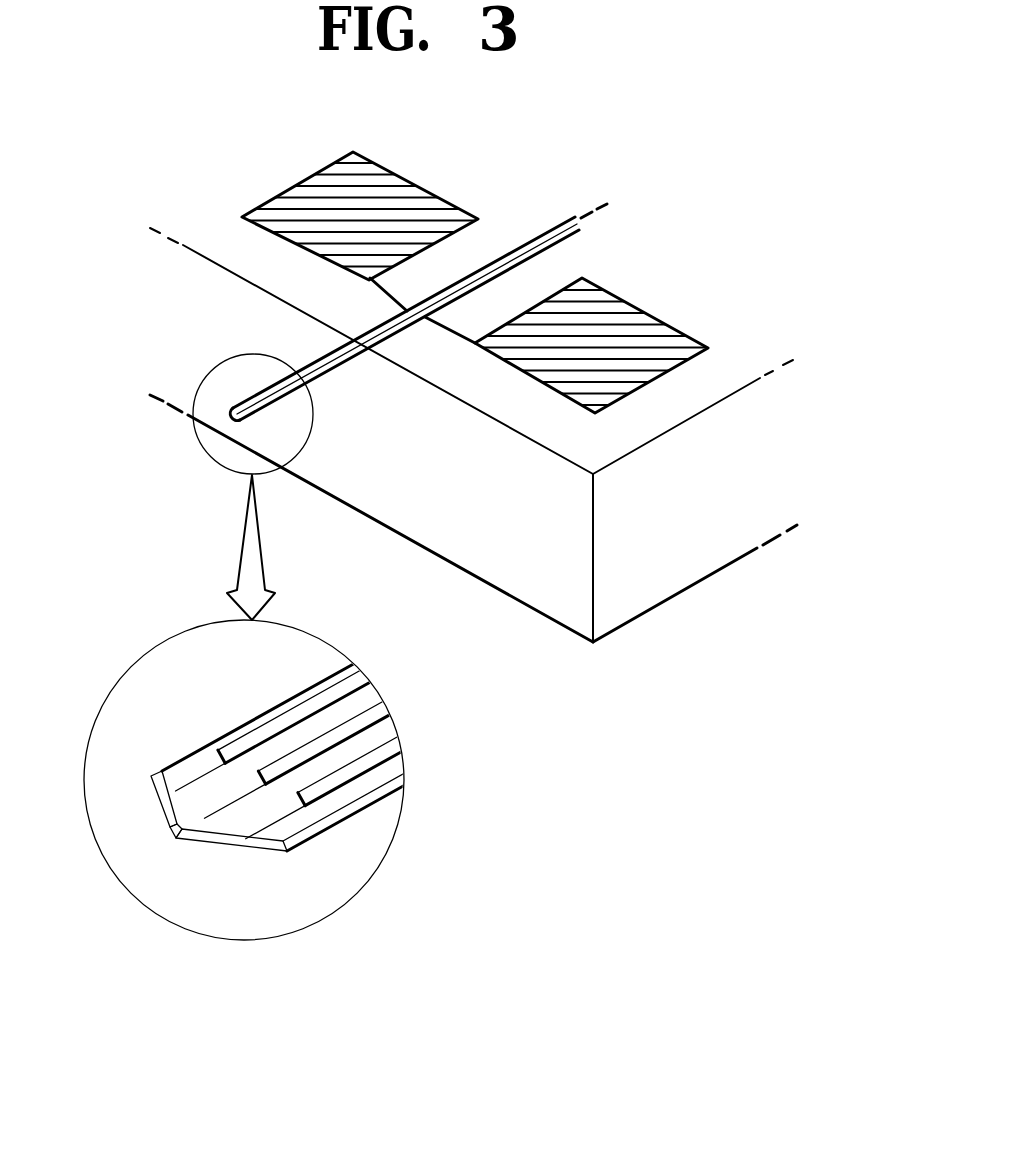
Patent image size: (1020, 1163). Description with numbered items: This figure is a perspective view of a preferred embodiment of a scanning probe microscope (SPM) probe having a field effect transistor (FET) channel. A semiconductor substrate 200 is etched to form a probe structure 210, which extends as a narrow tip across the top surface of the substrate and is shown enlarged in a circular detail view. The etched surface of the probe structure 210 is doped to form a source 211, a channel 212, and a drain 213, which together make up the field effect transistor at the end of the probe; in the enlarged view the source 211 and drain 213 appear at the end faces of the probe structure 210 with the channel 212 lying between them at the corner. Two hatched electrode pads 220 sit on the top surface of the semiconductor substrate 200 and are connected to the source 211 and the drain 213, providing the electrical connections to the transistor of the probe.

The semiconductor substrate 200 is at (580, 620).
The probe structure 210 is at (320, 601).
The source 211 is at (158, 800).
The channel 212 is at (177, 843).
The drain 213 is at (250, 845).
The electrode pads 220 is at (655, 352).